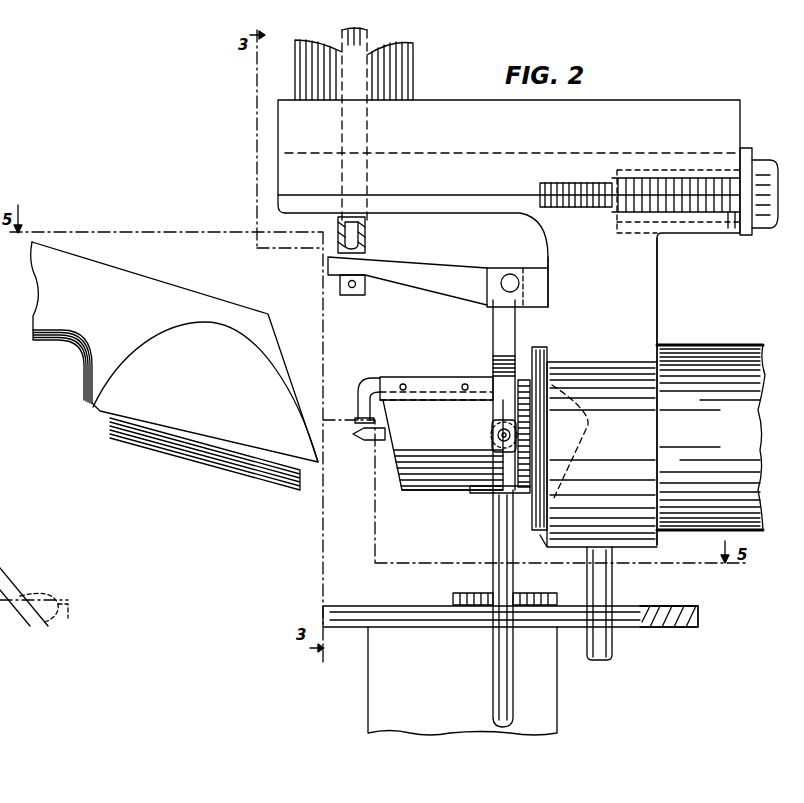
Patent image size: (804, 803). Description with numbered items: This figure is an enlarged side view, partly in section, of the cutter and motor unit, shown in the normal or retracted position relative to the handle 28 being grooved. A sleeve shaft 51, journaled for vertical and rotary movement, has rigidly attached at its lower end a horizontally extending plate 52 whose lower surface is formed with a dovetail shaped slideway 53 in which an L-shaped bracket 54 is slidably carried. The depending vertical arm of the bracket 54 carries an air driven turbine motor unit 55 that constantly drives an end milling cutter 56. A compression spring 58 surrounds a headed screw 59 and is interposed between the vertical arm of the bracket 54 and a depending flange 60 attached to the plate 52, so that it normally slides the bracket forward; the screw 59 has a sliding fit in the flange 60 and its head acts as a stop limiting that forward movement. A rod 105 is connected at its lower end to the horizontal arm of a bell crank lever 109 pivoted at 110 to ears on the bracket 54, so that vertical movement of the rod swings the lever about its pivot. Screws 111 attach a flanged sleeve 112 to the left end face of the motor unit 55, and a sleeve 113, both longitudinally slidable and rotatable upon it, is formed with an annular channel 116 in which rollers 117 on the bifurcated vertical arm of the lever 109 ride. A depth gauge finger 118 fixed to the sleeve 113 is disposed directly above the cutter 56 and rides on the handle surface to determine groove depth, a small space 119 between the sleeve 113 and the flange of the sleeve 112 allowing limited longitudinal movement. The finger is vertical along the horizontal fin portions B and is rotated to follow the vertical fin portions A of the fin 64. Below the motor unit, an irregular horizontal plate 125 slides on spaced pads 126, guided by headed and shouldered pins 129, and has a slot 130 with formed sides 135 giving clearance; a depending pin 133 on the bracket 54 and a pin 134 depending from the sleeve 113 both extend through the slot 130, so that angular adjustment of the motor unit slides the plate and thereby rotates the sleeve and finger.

The handle 28 is at (124, 272).
The sleeve shaft 51 is at (414, 74).
The horizontally extending plate 52 is at (620, 102).
The dovetail shaped slideway 53 is at (290, 153).
The L-shaped bracket 54 is at (658, 271).
The air driven turbine motor unit 55 is at (722, 350).
The end milling cutter 56 is at (360, 441).
The compression spring 58 is at (722, 228).
The headed screw 59 is at (590, 182).
The depending flange 60 is at (746, 148).
The fin 64 is at (60, 344).
The rod 105 is at (368, 240).
The bell crank lever 109 is at (422, 289).
The pivot 110 is at (508, 274).
The screws 111 is at (594, 447).
The flanged sleeve 112 is at (405, 492).
The sleeve 113 is at (453, 492).
The annular channel 116 is at (506, 390).
The rollers 117 is at (496, 440).
The depth gauge finger 118 is at (358, 395).
The space 119 is at (520, 492).
The horizontal plate 125 is at (680, 612).
The spaced pads 126 is at (558, 707).
The headed and shouldered pins 129 is at (455, 598).
The slot 130 is at (648, 652).
The depending pin 133 is at (612, 590).
The pin 134 is at (495, 663).
The formed sides of slot 135 is at (386, 617).
The vertical fin portions A is at (80, 394).
The horizontal peripheral fin portions B is at (59, 319).